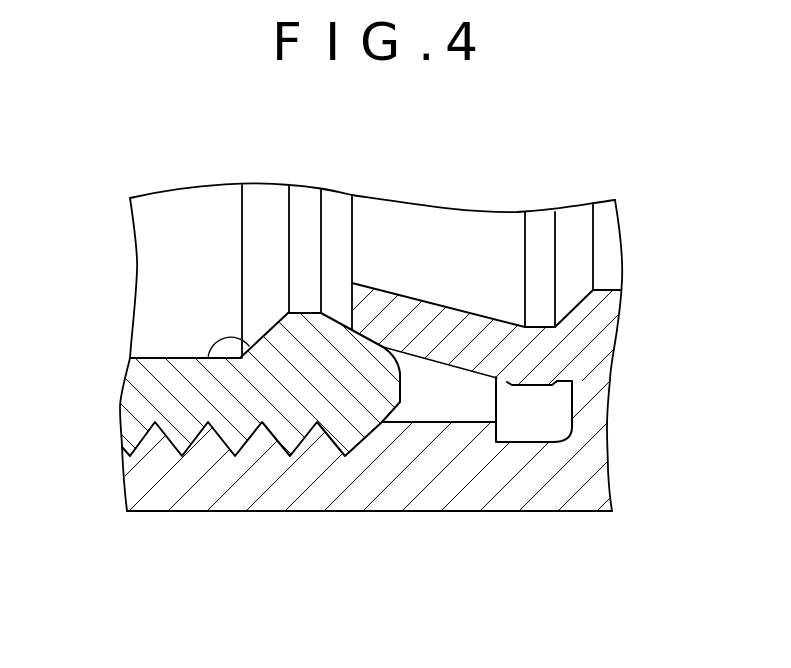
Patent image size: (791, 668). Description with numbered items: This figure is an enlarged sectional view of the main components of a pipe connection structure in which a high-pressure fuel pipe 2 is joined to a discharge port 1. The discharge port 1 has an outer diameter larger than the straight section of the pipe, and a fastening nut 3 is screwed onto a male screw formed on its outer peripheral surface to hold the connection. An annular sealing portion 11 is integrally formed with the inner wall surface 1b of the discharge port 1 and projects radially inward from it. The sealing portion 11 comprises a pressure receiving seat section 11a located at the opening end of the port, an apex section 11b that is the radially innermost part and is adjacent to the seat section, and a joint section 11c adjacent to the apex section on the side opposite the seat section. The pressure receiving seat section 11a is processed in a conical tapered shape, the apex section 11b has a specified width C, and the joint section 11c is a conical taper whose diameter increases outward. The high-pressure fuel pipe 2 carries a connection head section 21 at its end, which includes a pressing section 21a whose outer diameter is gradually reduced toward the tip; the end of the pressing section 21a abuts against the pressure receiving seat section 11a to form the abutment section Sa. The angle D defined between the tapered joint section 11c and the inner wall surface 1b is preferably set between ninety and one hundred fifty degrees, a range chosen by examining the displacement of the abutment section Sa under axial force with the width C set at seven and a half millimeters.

The discharge port 1 is at (117, 423).
The inner wall surface 1b is at (153, 358).
The high-pressure fuel pipe 2 is at (478, 364).
The fastening nut 3 is at (258, 514).
The sealing portion 11 is at (268, 363).
The pressure receiving seat section 11a is at (333, 319).
The apex section 11b is at (303, 313).
The joint section 11c is at (208, 360).
The connection head section 21 is at (476, 385).
The pressing section 21a is at (423, 352).
The abutment section Sa is at (400, 296).
The width of the apex section C is at (288, 313).
The angle D is at (270, 323).